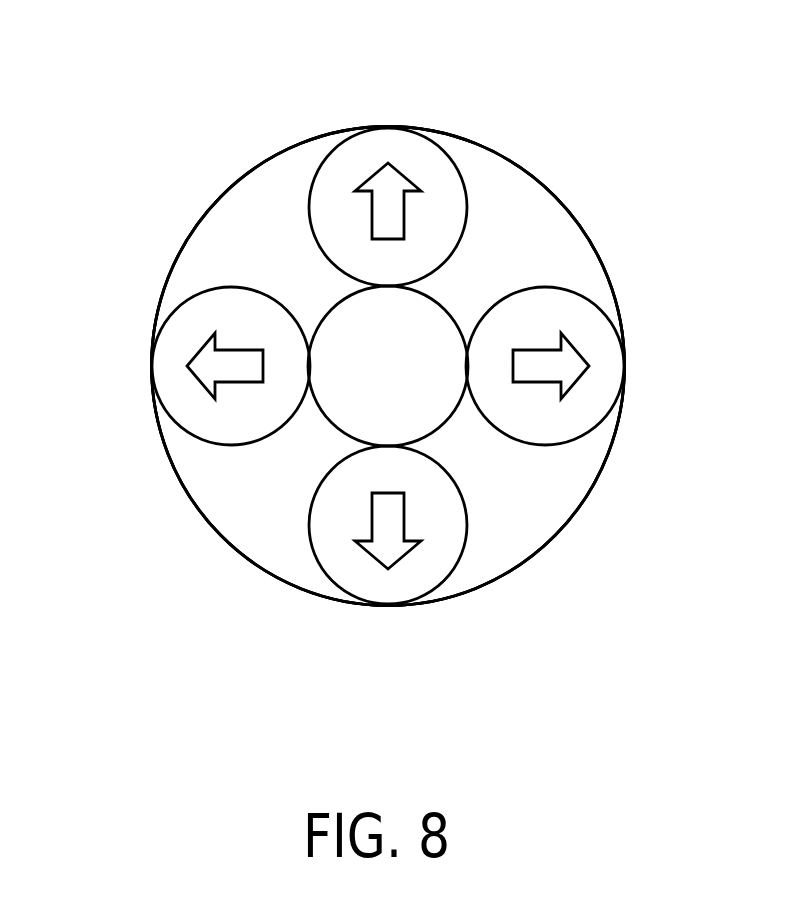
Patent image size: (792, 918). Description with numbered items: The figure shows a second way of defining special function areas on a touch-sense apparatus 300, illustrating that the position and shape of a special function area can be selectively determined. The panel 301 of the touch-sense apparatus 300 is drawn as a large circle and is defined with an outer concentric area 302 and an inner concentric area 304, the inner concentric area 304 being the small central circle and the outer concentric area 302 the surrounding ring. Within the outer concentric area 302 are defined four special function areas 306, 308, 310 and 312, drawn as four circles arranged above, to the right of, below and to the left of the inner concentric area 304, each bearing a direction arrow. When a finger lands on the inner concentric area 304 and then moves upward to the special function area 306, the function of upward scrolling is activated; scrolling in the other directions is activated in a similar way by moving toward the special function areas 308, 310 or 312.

The touch-sense apparatus 300 is at (667, 115).
The panel 301 is at (543, 173).
The outer concentric area 302 is at (560, 247).
The inner concentric area 304 is at (420, 405).
The special function area 306 is at (387, 142).
The special function area 308 is at (602, 370).
The special function area 310 is at (388, 590).
The special function area 312 is at (172, 363).